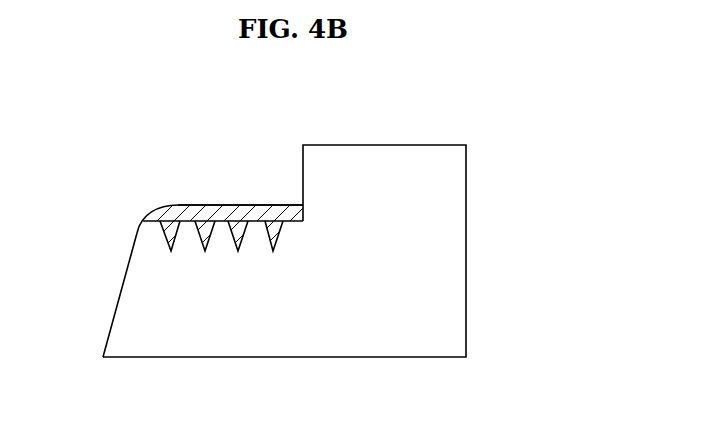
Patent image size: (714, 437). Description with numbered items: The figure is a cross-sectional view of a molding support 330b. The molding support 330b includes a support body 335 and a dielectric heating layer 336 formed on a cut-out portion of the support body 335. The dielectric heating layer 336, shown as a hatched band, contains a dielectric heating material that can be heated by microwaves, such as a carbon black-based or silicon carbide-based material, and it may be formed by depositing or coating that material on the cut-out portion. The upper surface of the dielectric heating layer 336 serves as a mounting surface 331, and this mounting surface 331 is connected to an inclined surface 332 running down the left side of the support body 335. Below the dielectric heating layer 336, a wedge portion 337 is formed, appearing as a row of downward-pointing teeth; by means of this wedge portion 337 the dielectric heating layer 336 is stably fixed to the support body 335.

The molding support 330b is at (135, 110).
The mounting surface 331 is at (186, 204).
The inclined surface 332 is at (127, 277).
The support body 335 is at (450, 254).
The dielectric heating layer 336 is at (246, 212).
The wedge portion 337 is at (172, 232).